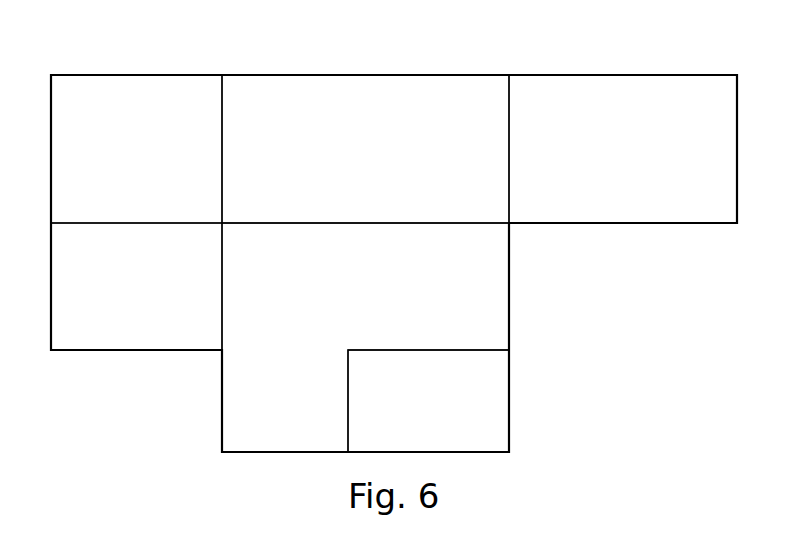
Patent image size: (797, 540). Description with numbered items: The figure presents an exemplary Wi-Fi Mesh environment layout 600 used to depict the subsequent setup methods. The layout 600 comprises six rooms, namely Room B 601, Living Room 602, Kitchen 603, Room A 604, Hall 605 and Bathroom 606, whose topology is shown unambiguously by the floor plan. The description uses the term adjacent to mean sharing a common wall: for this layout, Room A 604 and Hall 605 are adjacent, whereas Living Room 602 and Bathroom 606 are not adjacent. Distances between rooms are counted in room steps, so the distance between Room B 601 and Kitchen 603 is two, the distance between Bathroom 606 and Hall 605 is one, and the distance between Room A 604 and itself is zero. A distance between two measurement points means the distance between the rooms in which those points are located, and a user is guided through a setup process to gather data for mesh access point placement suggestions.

The layout 600 is at (342, 62).
The Room B 601 is at (193, 62).
The Living Room 602 is at (478, 62).
The Kitchen 603 is at (707, 62).
The Room A 604 is at (108, 333).
The Hall 605 is at (580, 293).
The Bathroom 606 is at (580, 393).